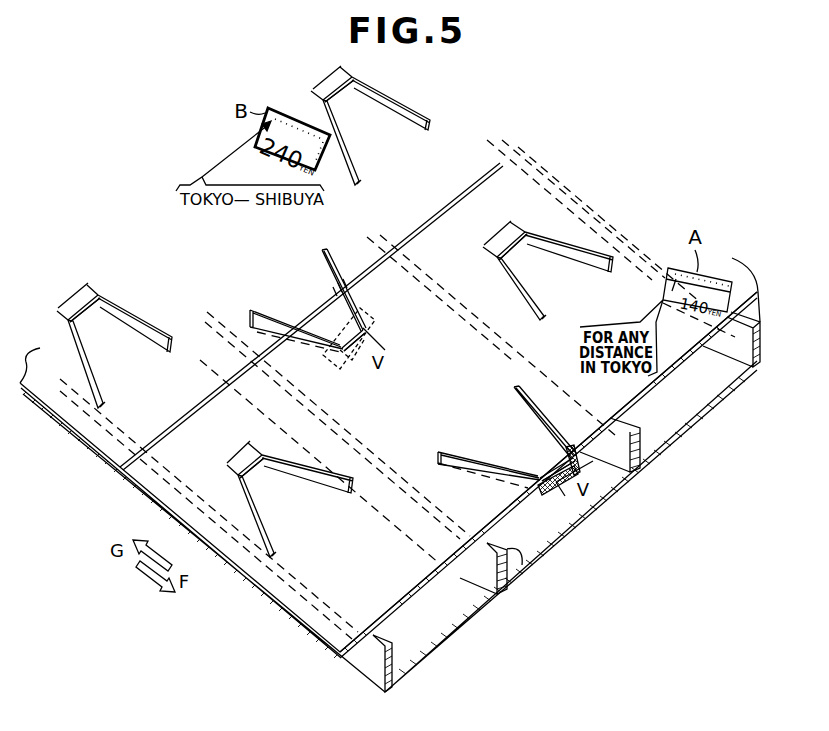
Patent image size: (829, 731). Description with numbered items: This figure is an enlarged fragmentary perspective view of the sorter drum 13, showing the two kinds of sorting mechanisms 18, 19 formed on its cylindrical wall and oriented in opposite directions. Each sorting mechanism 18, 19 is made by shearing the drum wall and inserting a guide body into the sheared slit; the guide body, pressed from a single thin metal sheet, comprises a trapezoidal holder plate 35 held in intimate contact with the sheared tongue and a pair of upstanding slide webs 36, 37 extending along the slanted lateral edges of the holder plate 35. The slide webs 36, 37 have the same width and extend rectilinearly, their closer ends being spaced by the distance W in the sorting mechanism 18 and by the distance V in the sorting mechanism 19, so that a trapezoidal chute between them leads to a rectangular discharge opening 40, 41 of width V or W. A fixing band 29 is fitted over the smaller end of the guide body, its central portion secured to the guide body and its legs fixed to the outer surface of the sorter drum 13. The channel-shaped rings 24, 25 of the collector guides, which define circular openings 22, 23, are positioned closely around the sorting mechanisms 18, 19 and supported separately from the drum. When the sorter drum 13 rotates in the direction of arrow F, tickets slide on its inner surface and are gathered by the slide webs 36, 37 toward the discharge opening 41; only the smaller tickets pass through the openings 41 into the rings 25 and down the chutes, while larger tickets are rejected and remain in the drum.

The sorter drum 13 is at (243, 565).
The sorting mechanism 18 is at (333, 309).
The sorting mechanism 19 is at (355, 290).
The circular opening 22 is at (388, 643).
The circular opening 23 is at (520, 567).
The ring 24 is at (458, 628).
The ring 25 is at (588, 514).
The fixing band 29 is at (382, 338).
The holder plate 35 is at (366, 112).
The slide web 36 is at (425, 127).
The slide web 37 is at (358, 172).
The discharge opening 40 is at (362, 88).
The discharge opening 41 is at (353, 365).